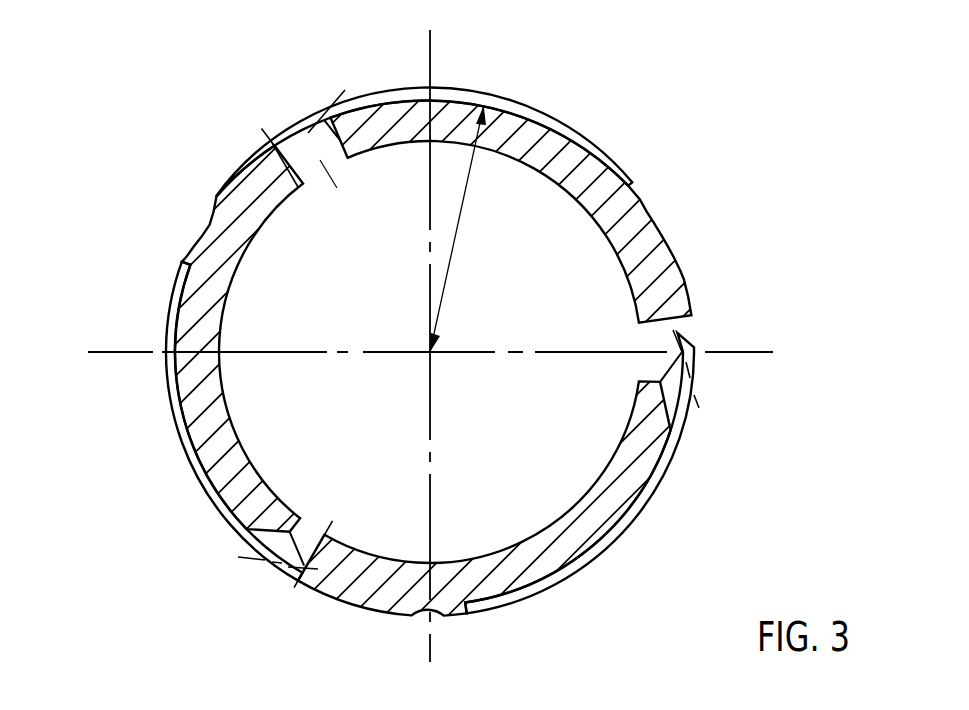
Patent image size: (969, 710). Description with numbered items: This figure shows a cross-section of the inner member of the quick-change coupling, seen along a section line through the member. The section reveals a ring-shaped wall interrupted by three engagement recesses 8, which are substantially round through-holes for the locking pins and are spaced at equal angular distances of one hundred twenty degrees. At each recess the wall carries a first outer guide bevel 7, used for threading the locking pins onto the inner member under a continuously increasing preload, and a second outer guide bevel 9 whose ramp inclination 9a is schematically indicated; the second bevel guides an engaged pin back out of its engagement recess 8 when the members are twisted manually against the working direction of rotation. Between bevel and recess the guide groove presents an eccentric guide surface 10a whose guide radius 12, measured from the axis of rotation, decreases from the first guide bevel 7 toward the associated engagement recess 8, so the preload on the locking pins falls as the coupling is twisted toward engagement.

The first outer guide bevel 7 is at (681, 231).
The engagement recess 8 is at (278, 128).
The second outer guide bevel 9 is at (344, 164).
The ramp inclination 9a is at (700, 406).
The eccentric guide surface 10a is at (377, 100).
The guide radius 12 is at (458, 246).